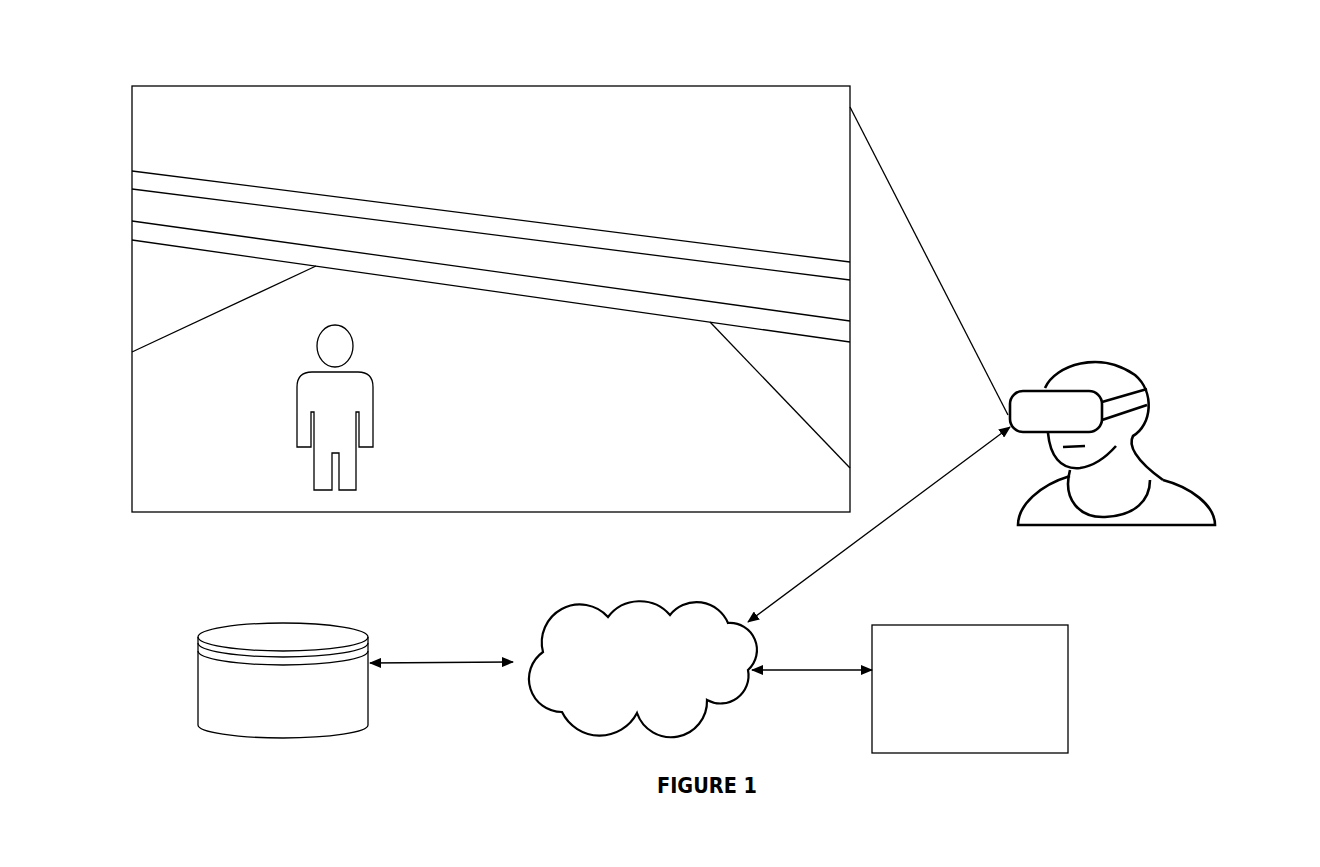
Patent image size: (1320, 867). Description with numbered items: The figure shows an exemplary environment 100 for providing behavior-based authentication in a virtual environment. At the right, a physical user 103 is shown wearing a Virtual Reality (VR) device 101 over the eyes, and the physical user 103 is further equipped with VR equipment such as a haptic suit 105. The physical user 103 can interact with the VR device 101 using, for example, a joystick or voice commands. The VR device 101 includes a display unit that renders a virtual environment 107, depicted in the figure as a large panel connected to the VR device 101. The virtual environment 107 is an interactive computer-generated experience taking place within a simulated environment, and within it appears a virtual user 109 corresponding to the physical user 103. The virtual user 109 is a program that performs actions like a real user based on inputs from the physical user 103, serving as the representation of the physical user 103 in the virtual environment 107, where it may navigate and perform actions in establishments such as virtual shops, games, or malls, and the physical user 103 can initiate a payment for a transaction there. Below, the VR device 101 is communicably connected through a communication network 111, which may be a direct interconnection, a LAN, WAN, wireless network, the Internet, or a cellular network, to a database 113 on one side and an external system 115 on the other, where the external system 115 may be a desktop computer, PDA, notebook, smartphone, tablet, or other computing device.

The environment 100 is at (857, 55).
The Virtual Reality (VR) device 101 is at (1009, 396).
The physical user 103 is at (1130, 378).
The haptic suit 105 is at (1140, 418).
The virtual environment 107 is at (491, 299).
The virtual user 109 is at (356, 334).
The communication network 111 is at (643, 669).
The database 113 is at (283, 680).
The external system 115 is at (970, 689).